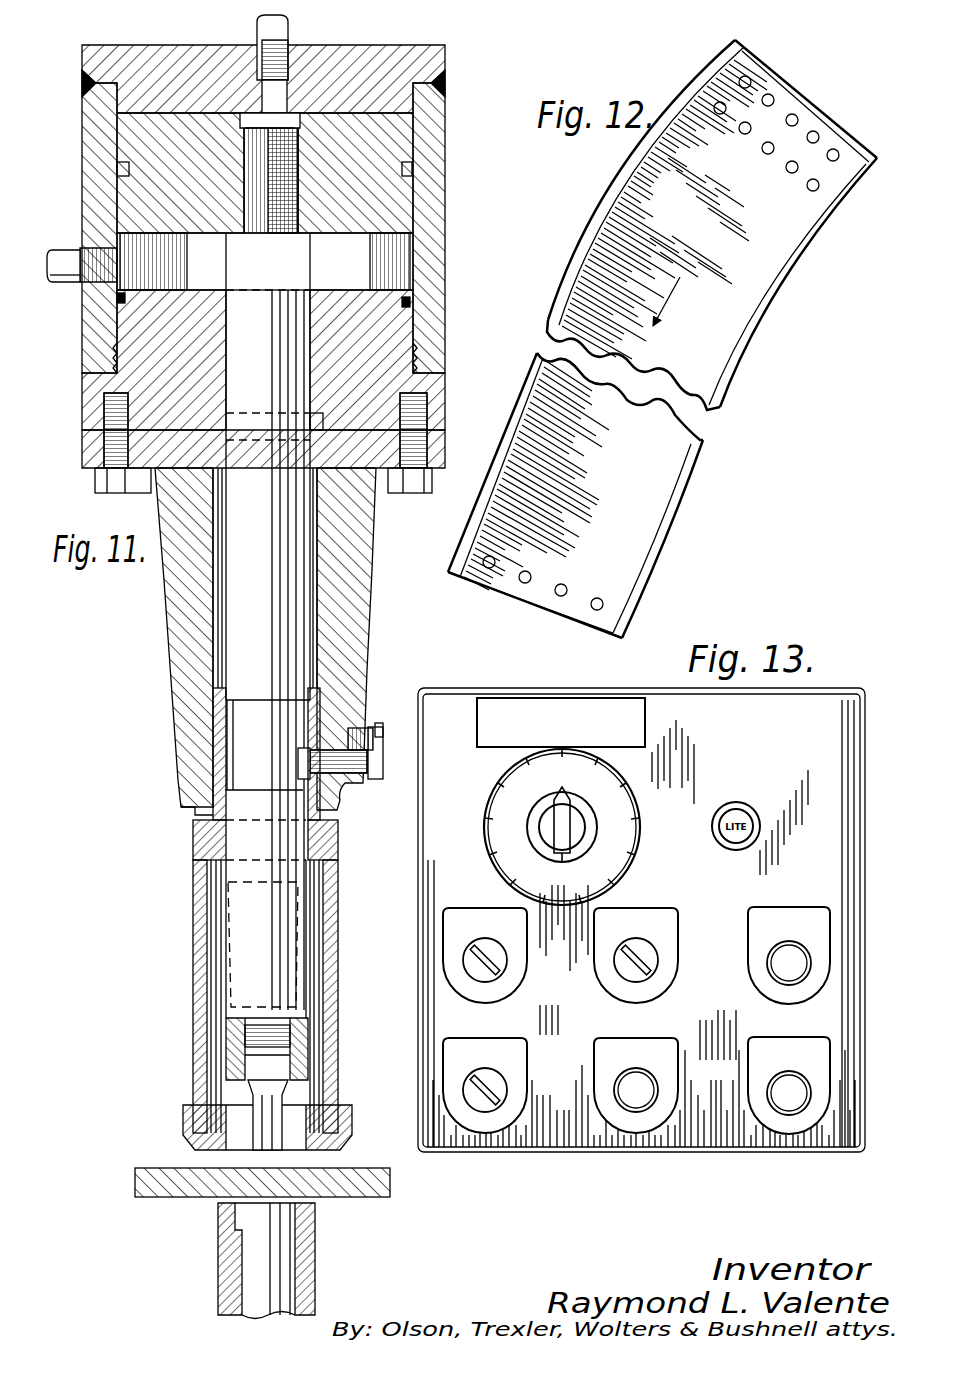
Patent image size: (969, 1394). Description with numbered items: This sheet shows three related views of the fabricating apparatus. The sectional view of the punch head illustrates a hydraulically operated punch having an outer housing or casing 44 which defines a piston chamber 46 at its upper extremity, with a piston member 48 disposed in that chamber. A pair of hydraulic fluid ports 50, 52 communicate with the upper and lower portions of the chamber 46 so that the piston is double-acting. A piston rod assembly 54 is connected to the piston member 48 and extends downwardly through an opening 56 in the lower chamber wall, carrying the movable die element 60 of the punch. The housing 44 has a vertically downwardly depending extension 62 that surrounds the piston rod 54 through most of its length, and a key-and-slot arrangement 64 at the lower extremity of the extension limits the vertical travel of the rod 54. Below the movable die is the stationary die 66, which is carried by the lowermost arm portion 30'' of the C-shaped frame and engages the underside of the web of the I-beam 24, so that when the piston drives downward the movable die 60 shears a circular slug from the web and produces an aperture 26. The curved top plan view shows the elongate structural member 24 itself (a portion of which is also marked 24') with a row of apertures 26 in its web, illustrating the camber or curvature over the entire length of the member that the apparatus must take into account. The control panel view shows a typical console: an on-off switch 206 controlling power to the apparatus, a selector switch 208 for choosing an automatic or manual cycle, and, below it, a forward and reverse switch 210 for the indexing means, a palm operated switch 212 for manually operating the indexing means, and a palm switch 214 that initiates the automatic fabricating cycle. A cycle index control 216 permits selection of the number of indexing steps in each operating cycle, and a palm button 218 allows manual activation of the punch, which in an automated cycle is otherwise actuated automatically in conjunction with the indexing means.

In FIG. 11, the elongate structural member 24 is at (233, 1155).
In FIG. 12, the elongate structural member 24 is at (662, 339).
In FIG. 12, the punched web portion 24' is at (798, 282).
In FIG. 12, the aperture 26 is at (797, 118).
In FIG. 11, the lowermost arm portion 30'' is at (209, 1261).
In FIG. 11, the outer housing 44 is at (440, 337).
In FIG. 11, the piston chamber 46 is at (398, 264).
In FIG. 11, the piston member 48 is at (385, 148).
In FIG. 11, the hydraulic fluid port 50 is at (257, 30).
In FIG. 11, the hydraulic fluid port 52 is at (62, 262).
In FIG. 11, the piston rod assembly 54 is at (242, 276).
In FIG. 11, the opening 56 is at (316, 298).
In FIG. 11, the movable die element 60 is at (265, 1112).
In FIG. 11, the downwardly depending extension 62 is at (343, 628).
In FIG. 11, the key-and-slot arrangement 64 is at (324, 746).
In FIG. 11, the stationary die 66 is at (225, 1222).
In FIG. 13, the on-off switch 206 is at (466, 906).
In FIG. 13, the selector switch 208 is at (643, 906).
In FIG. 13, the forward and reverse switch 210 is at (453, 1038).
In FIG. 13, the palm operated switch 212 is at (603, 1038).
In FIG. 13, the palm switch 214 is at (762, 1037).
In FIG. 13, the cycle index control 216 is at (486, 818).
In FIG. 13, the palm button 218 is at (829, 912).